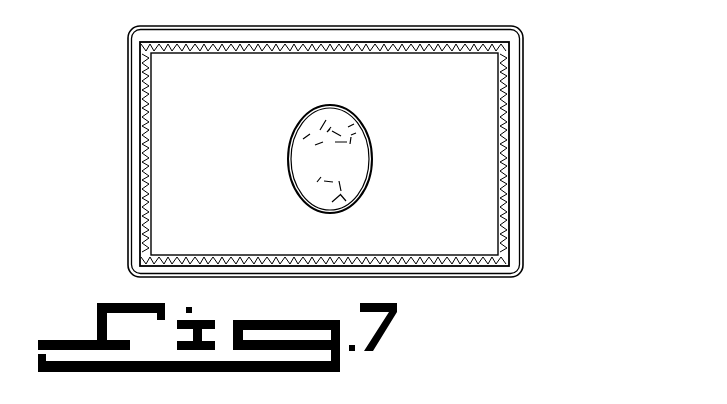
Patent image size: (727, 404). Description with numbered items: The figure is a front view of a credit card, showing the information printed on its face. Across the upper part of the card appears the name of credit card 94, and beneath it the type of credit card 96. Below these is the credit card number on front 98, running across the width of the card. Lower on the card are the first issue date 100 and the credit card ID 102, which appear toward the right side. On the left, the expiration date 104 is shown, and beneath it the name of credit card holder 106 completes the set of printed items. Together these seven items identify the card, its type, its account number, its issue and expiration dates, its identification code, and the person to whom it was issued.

The name of credit card 94 is at (476, 83).
The type of credit card 96 is at (412, 115).
The credit card number on front 98 is at (463, 163).
The first issue date 100 is at (433, 204).
The credit card ID 102 is at (497, 215).
The expiration date 104 is at (162, 210).
The name of credit card holder 106 is at (162, 241).